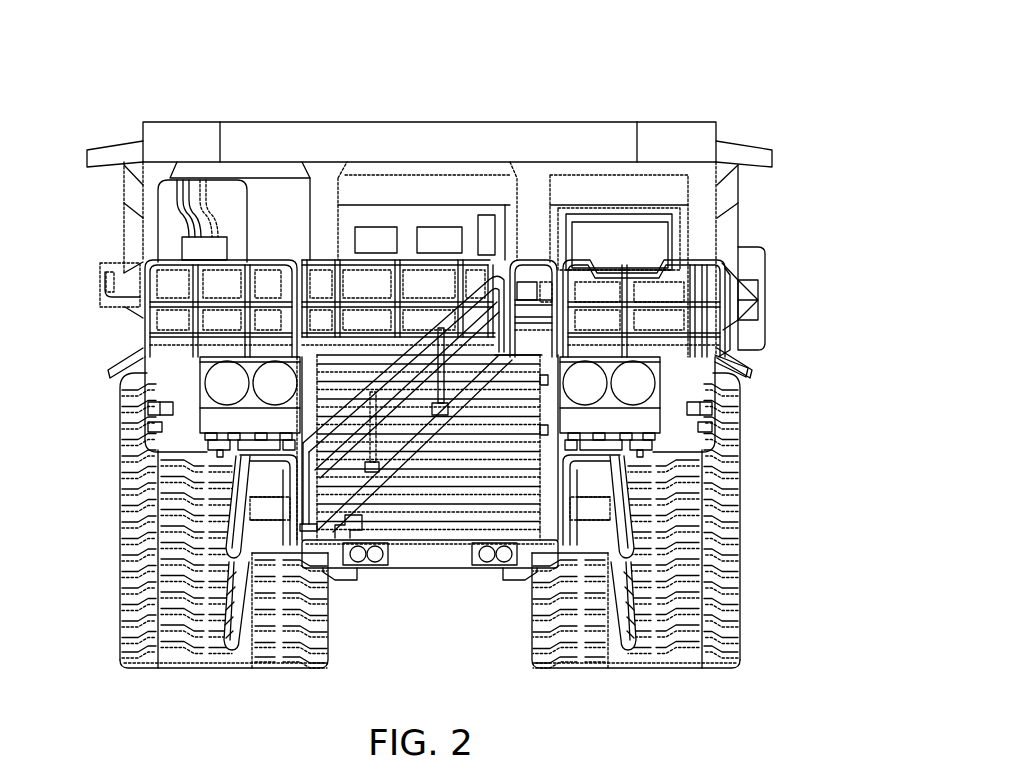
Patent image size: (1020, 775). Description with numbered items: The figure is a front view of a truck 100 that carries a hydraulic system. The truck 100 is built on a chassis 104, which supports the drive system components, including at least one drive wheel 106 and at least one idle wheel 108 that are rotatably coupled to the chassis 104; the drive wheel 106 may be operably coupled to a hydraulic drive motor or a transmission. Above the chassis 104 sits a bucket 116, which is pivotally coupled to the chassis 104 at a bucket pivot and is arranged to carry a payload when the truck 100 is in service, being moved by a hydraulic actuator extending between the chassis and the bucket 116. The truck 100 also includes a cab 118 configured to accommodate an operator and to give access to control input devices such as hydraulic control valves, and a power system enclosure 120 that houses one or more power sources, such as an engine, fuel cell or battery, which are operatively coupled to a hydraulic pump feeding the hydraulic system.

The truck 100 is at (699, 61).
The chassis 104 is at (388, 568).
The drive wheel 106 is at (140, 548).
The idle wheel 108 is at (665, 568).
The bucket 116 is at (262, 138).
The cab 118 is at (635, 236).
The power system enclosure 120 is at (448, 500).